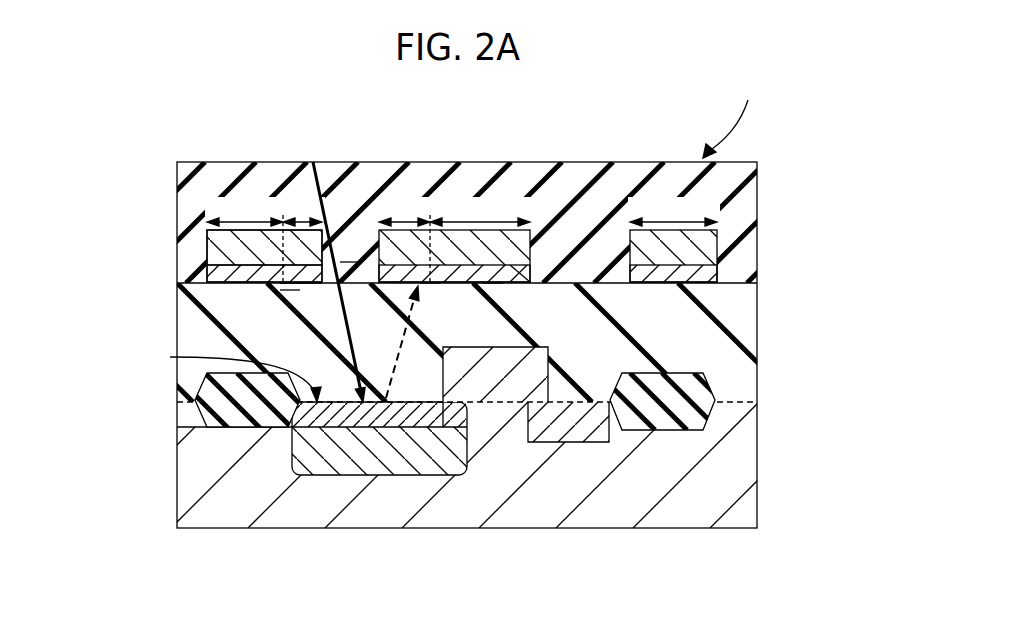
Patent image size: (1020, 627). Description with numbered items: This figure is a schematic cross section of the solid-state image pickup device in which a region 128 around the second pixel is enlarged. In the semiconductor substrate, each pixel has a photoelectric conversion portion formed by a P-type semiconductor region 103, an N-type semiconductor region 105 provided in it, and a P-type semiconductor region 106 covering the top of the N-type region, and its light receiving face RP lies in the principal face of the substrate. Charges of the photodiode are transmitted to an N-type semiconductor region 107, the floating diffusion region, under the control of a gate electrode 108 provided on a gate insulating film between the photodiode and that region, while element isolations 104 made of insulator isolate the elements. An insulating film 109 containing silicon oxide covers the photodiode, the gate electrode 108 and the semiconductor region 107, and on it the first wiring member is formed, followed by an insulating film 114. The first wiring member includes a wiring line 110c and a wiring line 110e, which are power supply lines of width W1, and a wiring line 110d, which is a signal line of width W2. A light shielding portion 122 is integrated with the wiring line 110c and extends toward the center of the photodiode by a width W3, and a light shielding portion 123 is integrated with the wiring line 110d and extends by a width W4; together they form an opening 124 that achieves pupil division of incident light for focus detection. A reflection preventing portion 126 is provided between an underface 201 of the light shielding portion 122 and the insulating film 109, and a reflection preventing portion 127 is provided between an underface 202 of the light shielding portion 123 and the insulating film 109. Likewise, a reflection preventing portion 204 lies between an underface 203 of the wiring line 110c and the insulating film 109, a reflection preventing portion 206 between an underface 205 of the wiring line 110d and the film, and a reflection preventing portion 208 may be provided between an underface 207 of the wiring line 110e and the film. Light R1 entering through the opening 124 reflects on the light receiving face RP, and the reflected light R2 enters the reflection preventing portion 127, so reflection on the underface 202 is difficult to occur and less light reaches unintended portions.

The P-type semiconductor region 103 is at (200, 490).
The element isolation 104 is at (203, 414).
The N-type semiconductor region 105 is at (303, 405).
The P-type semiconductor region 106 is at (353, 462).
The N-type semiconductor region 107 is at (565, 437).
The gate electrode 108 is at (503, 392).
The insulating film 109 is at (736, 351).
The wiring line 110c is at (215, 242).
The wiring line 110d is at (522, 238).
The wiring line 110e is at (632, 248).
The insulating film 114 is at (733, 188).
The light shielding portion 122 is at (285, 240).
The light shielding portion 123 is at (432, 262).
The opening 124 is at (357, 258).
The reflection preventing portion 126 is at (292, 290).
The reflection preventing portion 127 is at (429, 284).
The region 128 is at (734, 115).
The underface 201 is at (303, 283).
The underface 202 is at (373, 265).
The underface 203 is at (212, 282).
The reflection preventing portion 204 is at (243, 262).
The underface 205 is at (535, 278).
The reflection preventing portion 206 is at (493, 284).
The underface 207 is at (700, 268).
The reflection preventing portion 208 is at (678, 284).
The light R1 is at (322, 180).
The light R2 is at (392, 405).
The light receiving face RP is at (224, 373).
The width W1 is at (462, 209).
The width W2 is at (480, 209).
The width W3 is at (301, 220).
The width W4 is at (404, 209).